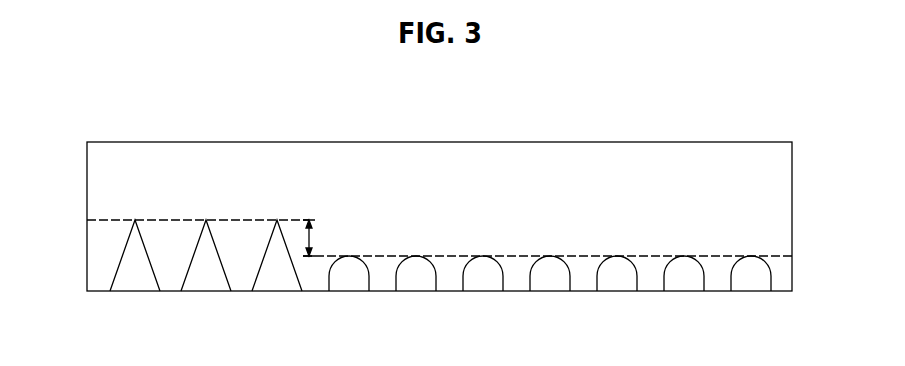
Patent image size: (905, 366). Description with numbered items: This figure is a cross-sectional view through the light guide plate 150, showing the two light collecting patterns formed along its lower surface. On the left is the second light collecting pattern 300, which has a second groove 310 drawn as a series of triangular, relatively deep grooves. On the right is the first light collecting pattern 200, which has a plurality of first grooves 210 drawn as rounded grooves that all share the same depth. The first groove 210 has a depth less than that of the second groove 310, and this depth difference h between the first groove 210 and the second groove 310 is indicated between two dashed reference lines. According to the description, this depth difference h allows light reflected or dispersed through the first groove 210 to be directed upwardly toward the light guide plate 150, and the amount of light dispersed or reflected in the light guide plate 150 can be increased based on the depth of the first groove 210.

The light guide plate 150 is at (488, 131).
The second light collecting pattern 300 is at (178, 282).
The second groove 310 is at (315, 302).
The first light collecting pattern 200 is at (570, 300).
The first groove 210 is at (315, 302).
The depth difference h is at (315, 238).